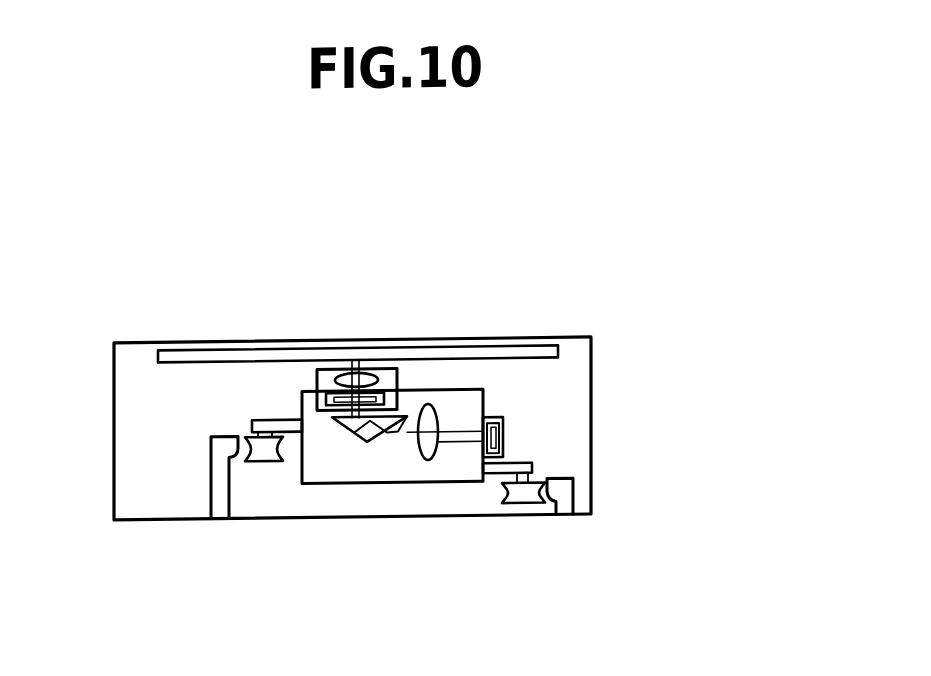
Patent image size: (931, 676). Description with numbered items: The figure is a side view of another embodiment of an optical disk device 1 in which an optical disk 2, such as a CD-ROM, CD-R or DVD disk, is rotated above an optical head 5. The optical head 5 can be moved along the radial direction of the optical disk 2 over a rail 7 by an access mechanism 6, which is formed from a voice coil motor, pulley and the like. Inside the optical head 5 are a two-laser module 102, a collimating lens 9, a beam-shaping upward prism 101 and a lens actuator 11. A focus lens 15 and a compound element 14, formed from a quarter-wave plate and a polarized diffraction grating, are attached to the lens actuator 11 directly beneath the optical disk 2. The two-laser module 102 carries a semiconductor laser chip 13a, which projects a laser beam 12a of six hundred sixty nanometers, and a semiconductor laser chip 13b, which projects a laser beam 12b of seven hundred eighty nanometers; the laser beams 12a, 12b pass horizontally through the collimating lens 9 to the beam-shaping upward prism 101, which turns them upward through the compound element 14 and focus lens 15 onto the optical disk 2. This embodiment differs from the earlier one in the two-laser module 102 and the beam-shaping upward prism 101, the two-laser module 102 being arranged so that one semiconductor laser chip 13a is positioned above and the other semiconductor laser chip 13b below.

The optical disk device 1 is at (125, 340).
The optical disk 2 is at (215, 348).
The optical head 5 is at (333, 484).
The access mechanism 6 is at (267, 460).
The rail 7 is at (221, 498).
The collimating lens 9 is at (429, 462).
The lens actuator 11 is at (323, 369).
The laser beam 12a is at (462, 392).
The laser beam 12b is at (470, 486).
The semiconductor laser chip 13a is at (505, 429).
The semiconductor laser chip 13b is at (505, 449).
The compound element 14 is at (381, 390).
The focus lens 15 is at (375, 376).
The beam-shaping upward prism 101 is at (372, 442).
The two-laser module 102 is at (495, 419).